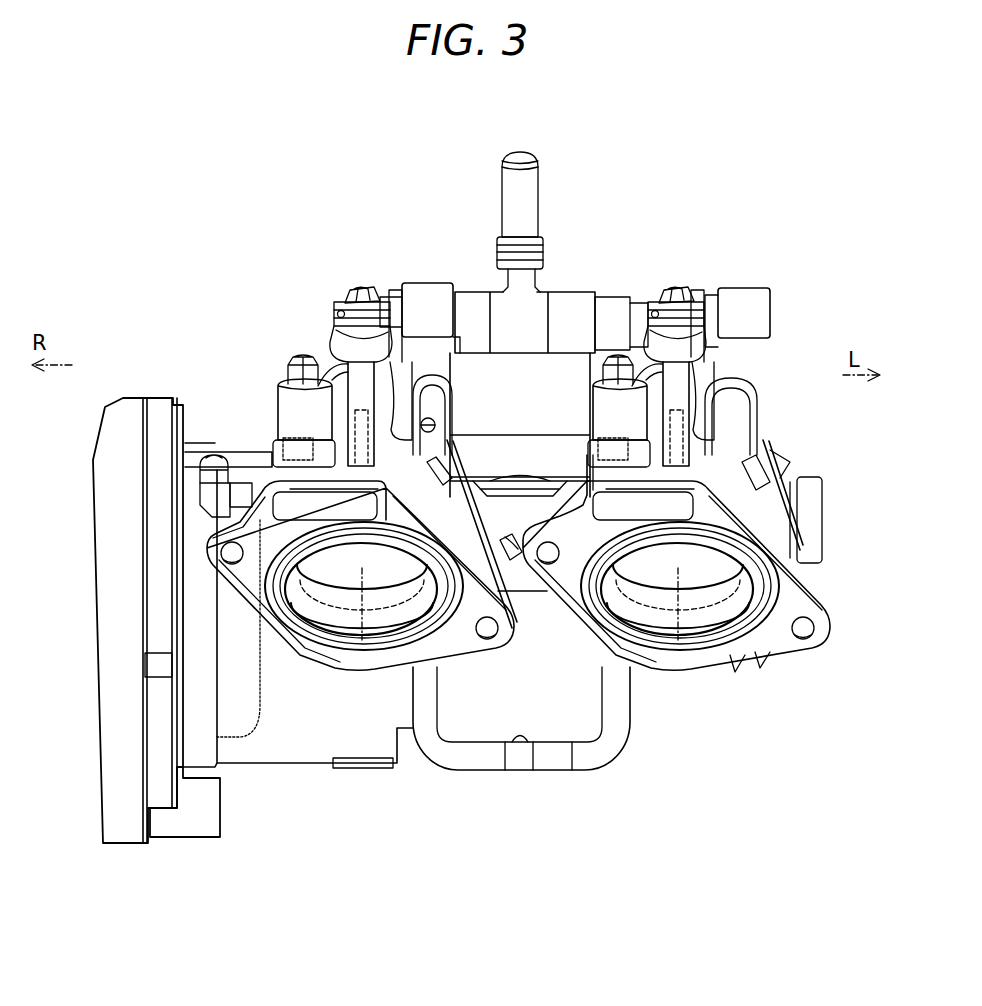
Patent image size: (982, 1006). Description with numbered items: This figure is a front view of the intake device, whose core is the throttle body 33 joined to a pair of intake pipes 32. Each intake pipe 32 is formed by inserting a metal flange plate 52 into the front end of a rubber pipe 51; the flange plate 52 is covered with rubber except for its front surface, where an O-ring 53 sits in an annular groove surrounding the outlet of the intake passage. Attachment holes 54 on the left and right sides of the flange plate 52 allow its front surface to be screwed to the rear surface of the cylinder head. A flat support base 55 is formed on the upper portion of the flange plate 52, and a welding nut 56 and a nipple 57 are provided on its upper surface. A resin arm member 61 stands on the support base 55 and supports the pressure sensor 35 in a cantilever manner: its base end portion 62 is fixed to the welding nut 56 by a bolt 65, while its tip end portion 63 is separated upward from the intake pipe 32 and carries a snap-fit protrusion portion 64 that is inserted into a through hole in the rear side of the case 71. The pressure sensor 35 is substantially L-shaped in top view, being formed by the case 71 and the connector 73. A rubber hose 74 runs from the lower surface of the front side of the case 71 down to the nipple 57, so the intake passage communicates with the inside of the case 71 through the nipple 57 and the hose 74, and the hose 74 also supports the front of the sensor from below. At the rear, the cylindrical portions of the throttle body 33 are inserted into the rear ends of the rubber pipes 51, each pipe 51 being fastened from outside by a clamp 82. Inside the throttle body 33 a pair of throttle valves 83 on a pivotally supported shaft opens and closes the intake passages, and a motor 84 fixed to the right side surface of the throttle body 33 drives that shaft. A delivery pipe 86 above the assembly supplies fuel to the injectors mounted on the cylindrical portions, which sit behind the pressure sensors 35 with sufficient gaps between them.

The intake pipe 32 is at (254, 460).
The throttle body 33 is at (108, 355).
The pressure sensor 35 is at (431, 265).
The pipe 51 is at (470, 505).
The flange plate 52 is at (443, 645).
The O-ring 53 is at (300, 662).
The attachment hole 54 is at (228, 556).
The support base 55 is at (205, 523).
The welding nut 56 is at (298, 437).
The nipple 57 is at (365, 390).
The arm member 61 is at (313, 340).
The base end portion 62 is at (288, 393).
The tip end portion 63 is at (396, 352).
The protrusion portion 64 is at (362, 288).
The bolt 65 is at (292, 357).
The case 71 is at (336, 308).
The connector 73 is at (452, 284).
The hose 74 is at (452, 372).
The clamp 82 is at (230, 460).
The throttle valve 83 is at (362, 575).
The motor 84 is at (100, 445).
The delivery pipe 86 is at (556, 280).